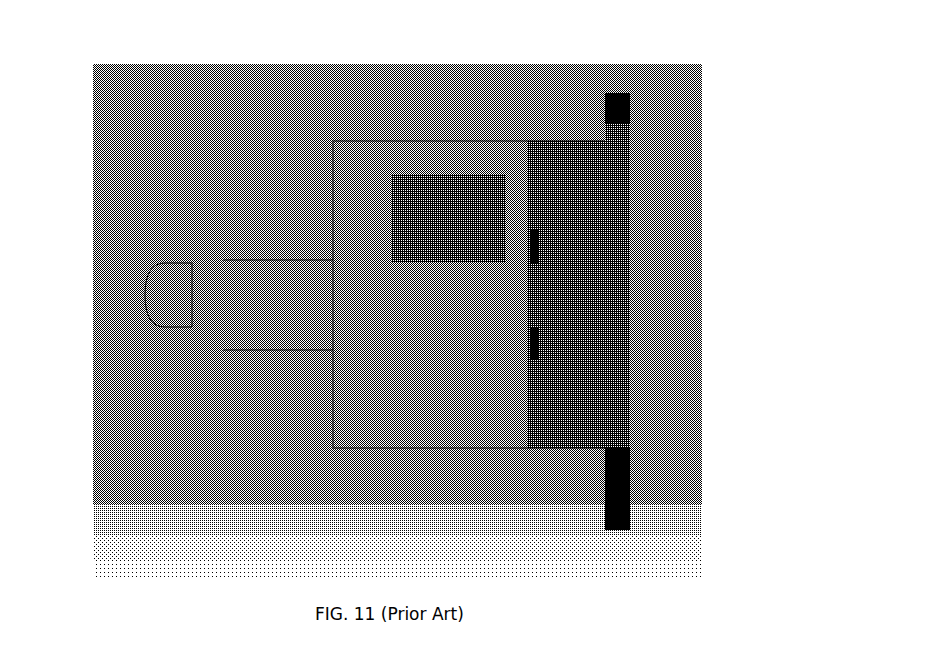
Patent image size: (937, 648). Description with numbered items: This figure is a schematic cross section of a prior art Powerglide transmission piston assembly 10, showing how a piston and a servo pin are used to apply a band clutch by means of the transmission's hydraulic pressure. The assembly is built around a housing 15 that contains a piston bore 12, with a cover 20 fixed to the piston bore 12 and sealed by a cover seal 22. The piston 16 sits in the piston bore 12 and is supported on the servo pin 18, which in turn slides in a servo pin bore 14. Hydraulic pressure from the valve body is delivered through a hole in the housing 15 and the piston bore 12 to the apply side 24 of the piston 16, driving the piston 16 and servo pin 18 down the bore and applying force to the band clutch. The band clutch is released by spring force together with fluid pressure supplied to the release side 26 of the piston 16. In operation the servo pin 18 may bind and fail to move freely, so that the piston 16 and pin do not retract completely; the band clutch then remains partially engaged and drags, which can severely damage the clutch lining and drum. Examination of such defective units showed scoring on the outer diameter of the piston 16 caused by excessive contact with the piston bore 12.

The transmission piston assembly 10 is at (668, 50).
The piston bore 12 is at (380, 144).
The servo pin bore 14 is at (223, 332).
The housing 15 is at (327, 124).
The piston 16 is at (475, 422).
The servo pin 18 is at (158, 307).
The cover 20 is at (633, 250).
The cover seal 22 is at (562, 447).
The apply side 24 is at (502, 152).
The release side 26 is at (417, 372).